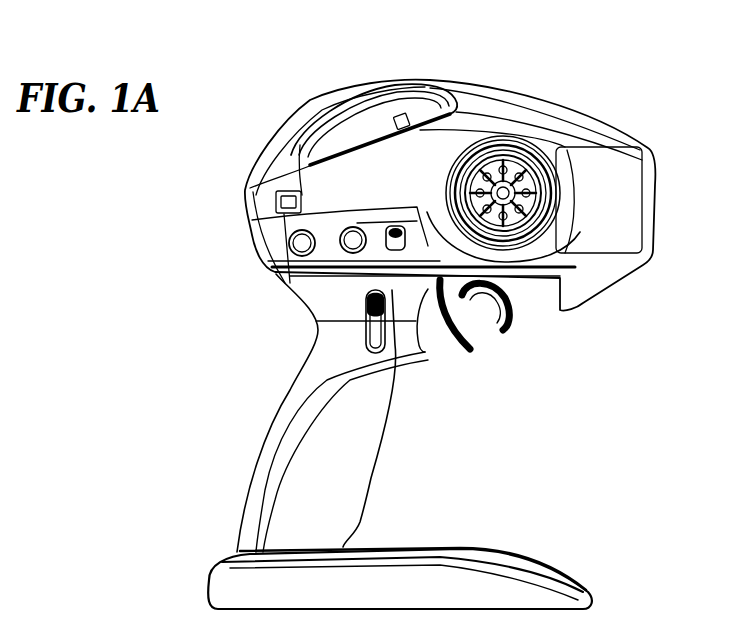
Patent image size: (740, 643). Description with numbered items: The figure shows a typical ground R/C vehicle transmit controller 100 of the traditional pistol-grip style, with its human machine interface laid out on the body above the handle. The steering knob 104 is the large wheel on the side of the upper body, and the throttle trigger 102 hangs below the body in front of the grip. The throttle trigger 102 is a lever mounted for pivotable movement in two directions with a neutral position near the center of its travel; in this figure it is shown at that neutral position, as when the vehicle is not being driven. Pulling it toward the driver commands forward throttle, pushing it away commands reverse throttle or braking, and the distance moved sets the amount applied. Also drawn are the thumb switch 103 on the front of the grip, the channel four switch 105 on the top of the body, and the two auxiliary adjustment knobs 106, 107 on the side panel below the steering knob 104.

The transmit controller 100 is at (260, 80).
The throttle trigger 102 is at (506, 331).
The thumb switch 103 is at (368, 340).
The steering knob 104 is at (443, 191).
The channel four switch 105 is at (398, 121).
The auxiliary adjustment knob 106 is at (341, 232).
The auxiliary adjustment knob 107 is at (288, 245).